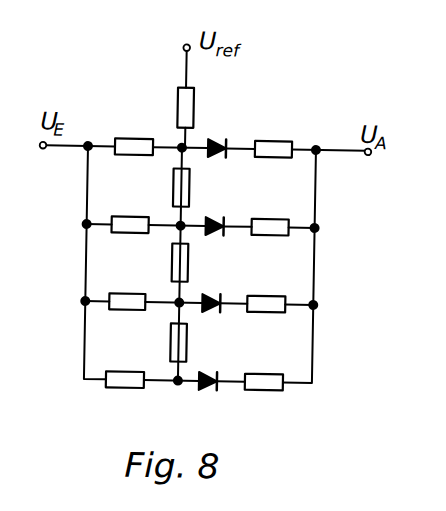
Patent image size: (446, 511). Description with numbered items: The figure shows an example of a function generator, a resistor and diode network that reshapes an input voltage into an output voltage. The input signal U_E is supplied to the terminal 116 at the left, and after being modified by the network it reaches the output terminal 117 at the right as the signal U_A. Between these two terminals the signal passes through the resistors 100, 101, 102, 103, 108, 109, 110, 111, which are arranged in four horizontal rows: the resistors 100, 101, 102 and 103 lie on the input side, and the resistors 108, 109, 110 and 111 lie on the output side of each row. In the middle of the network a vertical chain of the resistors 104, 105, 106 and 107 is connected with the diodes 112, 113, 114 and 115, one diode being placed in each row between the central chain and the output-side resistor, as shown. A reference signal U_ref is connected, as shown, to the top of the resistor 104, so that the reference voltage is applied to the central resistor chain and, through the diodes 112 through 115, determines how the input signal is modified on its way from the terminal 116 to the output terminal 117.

The resistor 100 is at (136, 145).
The resistor 101 is at (132, 223).
The resistor 102 is at (131, 300).
The resistor 103 is at (129, 378).
The resistor 104 is at (186, 109).
The resistor 105 is at (186, 189).
The resistor 106 is at (185, 265).
The resistor 107 is at (181, 342).
The resistor 108 is at (276, 145).
The resistor 109 is at (270, 223).
The resistor 110 is at (267, 300).
The resistor 111 is at (270, 378).
The diode 112 is at (219, 141).
The diode 113 is at (214, 223).
The diode 114 is at (212, 299).
The diode 115 is at (211, 377).
The terminal 116 is at (45, 150).
The output terminal 117 is at (369, 151).